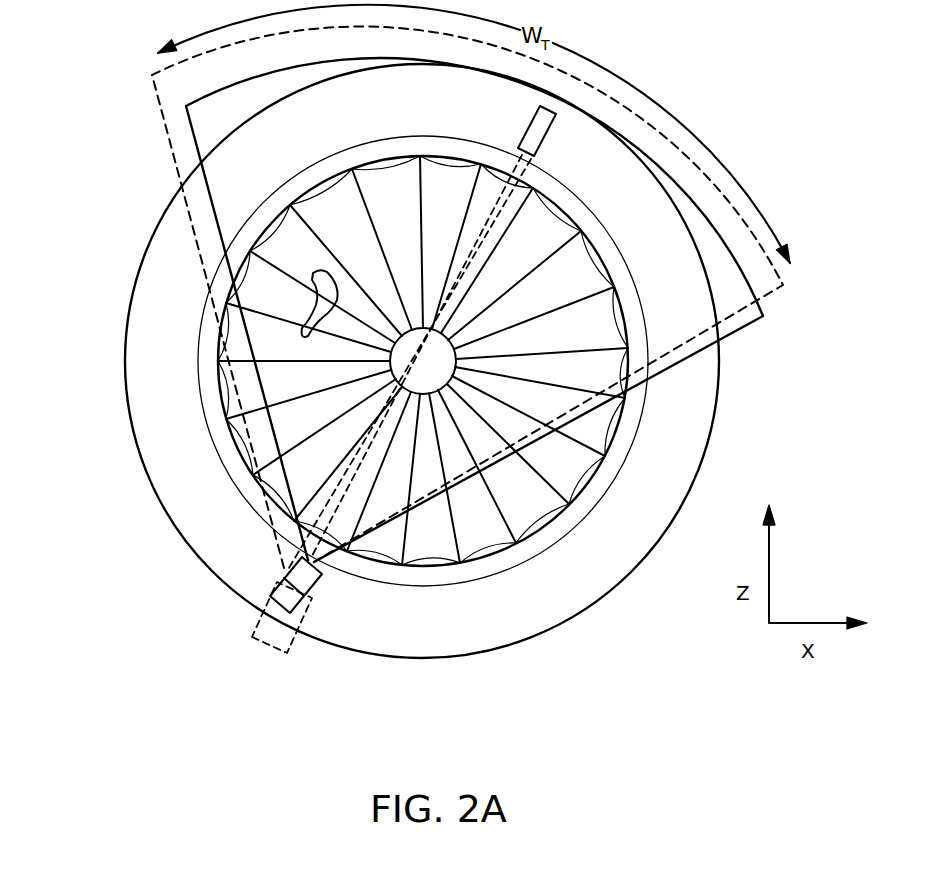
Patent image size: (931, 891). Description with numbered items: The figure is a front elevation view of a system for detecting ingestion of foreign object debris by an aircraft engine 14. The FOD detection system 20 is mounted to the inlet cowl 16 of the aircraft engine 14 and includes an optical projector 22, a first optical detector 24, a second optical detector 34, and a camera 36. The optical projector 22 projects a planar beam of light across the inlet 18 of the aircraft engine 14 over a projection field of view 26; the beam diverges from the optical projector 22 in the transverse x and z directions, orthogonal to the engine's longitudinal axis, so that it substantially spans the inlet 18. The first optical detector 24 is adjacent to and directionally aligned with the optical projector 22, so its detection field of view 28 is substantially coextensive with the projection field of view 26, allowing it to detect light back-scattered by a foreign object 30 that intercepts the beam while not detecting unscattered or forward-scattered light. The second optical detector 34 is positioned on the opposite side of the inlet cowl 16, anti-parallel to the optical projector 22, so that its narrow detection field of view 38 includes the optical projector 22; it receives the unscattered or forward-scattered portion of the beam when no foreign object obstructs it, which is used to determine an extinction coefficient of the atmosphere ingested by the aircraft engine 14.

The aircraft engine 14 is at (80, 251).
The inlet cowl 16 is at (179, 456).
The inlet 18 is at (562, 460).
The FOD detection system 20 is at (286, 586).
The optical projector 22 is at (290, 602).
The first optical detector 24 is at (279, 577).
The projection field of view 26 is at (742, 330).
The detection field of view 28 is at (158, 106).
The foreign object 30 is at (316, 272).
The second optical detector 34 is at (544, 146).
The camera 36 is at (318, 598).
The detection field of view 38 is at (487, 228).